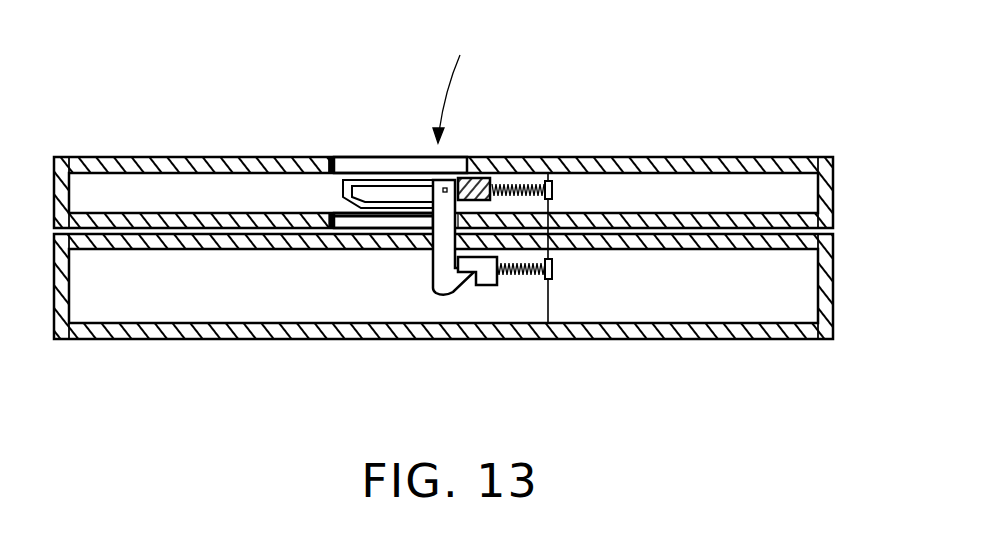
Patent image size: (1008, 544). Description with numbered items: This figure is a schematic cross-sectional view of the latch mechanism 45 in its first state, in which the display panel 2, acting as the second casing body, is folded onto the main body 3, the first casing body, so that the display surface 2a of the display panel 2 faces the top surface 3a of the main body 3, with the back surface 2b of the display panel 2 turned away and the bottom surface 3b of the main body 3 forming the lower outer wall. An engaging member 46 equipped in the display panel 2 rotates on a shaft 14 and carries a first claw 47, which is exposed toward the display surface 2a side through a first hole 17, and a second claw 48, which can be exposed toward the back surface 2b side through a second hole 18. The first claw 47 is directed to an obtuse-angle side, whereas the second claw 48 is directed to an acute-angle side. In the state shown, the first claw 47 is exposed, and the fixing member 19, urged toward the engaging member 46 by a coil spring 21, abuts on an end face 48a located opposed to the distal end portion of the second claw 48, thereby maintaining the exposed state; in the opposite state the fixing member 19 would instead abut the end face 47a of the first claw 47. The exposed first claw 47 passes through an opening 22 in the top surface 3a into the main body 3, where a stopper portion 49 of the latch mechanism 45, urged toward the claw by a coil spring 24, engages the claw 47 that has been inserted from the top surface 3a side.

The display panel 2 is at (473, 158).
The display surface 2a is at (777, 227).
The back surface 2b is at (672, 160).
The main body 3 is at (473, 313).
The top surface 3a is at (675, 228).
The bottom surface 3b is at (768, 340).
The shaft 14 is at (405, 207).
The first hole 17 is at (333, 212).
The second hole 18 is at (345, 165).
The fixing member 19 is at (482, 178).
The coil spring 21 is at (518, 183).
The opening 22 is at (423, 255).
The coil spring 24 is at (527, 277).
The latch mechanism 45 is at (450, 83).
The engaging member 46 is at (440, 192).
The first claw 47 is at (440, 295).
The end face 47a is at (445, 188).
The second claw 48 is at (358, 190).
The end face 48a is at (470, 182).
The stopper portion 49 is at (485, 287).